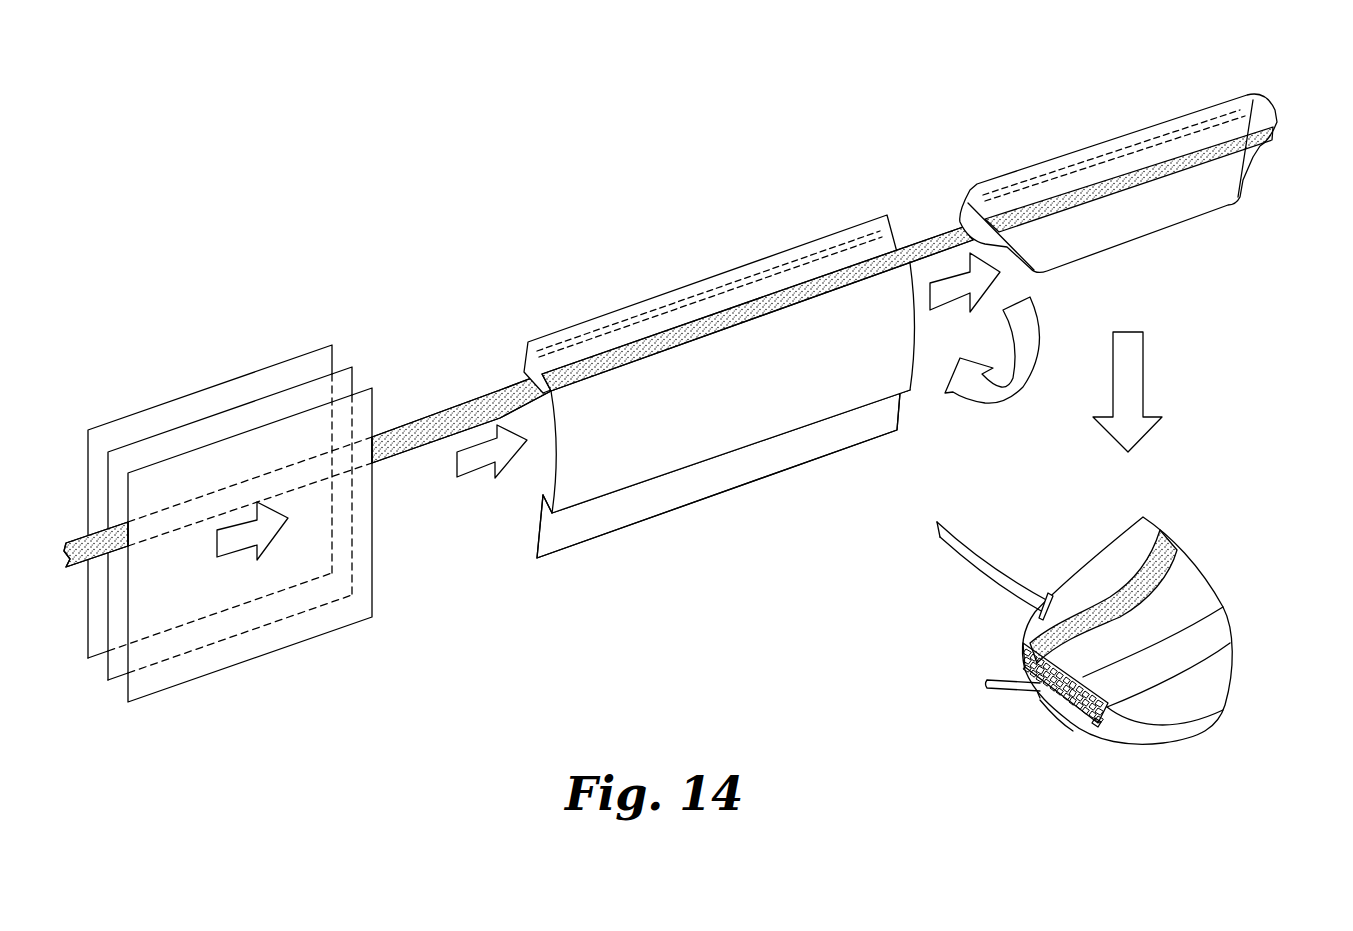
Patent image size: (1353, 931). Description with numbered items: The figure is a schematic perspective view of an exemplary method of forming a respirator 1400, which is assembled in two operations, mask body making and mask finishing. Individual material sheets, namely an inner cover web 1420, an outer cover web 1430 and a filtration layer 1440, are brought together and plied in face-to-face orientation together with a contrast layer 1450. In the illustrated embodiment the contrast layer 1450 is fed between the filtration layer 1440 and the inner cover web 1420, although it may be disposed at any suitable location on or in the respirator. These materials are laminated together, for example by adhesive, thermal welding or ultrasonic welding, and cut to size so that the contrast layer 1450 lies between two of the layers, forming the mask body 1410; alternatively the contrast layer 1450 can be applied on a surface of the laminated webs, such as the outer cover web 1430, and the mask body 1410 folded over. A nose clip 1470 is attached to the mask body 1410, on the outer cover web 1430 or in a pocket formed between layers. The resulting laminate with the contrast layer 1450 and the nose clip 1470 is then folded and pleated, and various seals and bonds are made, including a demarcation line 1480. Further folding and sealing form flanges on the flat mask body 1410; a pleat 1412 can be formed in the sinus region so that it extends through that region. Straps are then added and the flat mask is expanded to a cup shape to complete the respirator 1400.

The respirator 1400 is at (1062, 740).
The mask body 1410 is at (1090, 130).
The pleat 1412 is at (903, 247).
The inner cover web 1420 is at (298, 353).
The outer cover web 1430 is at (372, 392).
The filtration layer 1440 is at (223, 408).
The contrast layer 1450 is at (465, 410).
The nose clip 1470 is at (738, 280).
The demarcation line 1480 is at (1193, 220).